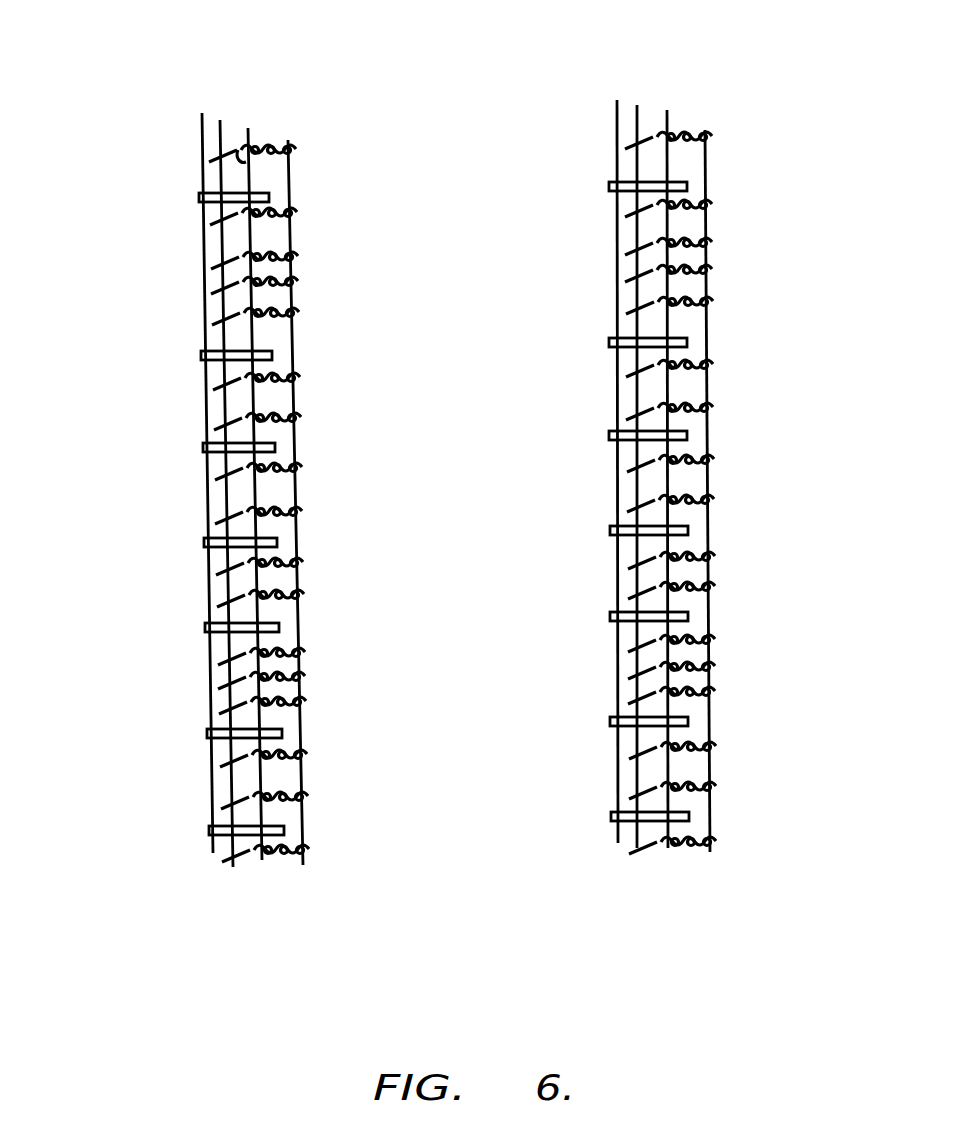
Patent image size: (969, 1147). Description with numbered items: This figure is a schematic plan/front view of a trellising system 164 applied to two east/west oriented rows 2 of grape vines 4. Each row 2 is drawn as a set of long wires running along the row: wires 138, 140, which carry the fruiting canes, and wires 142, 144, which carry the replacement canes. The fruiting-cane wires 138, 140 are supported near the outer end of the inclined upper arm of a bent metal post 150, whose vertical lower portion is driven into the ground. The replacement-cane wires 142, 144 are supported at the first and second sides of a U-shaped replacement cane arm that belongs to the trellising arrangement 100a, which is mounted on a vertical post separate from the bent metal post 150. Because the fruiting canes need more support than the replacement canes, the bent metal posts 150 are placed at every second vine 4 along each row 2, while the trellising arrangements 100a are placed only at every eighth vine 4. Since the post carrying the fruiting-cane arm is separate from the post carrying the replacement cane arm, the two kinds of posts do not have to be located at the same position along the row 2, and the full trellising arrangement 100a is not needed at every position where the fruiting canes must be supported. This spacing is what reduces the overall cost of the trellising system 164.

The row 2 is at (278, 884).
The grape vine 4 is at (272, 146).
The trellising arrangement 100a is at (296, 280).
The wire 138 is at (218, 255).
The wire 140 is at (216, 223).
The wire 142 is at (290, 230).
The wire 144 is at (296, 180).
The bent metal post 150 is at (206, 196).
The trellising system 164 is at (158, 87).